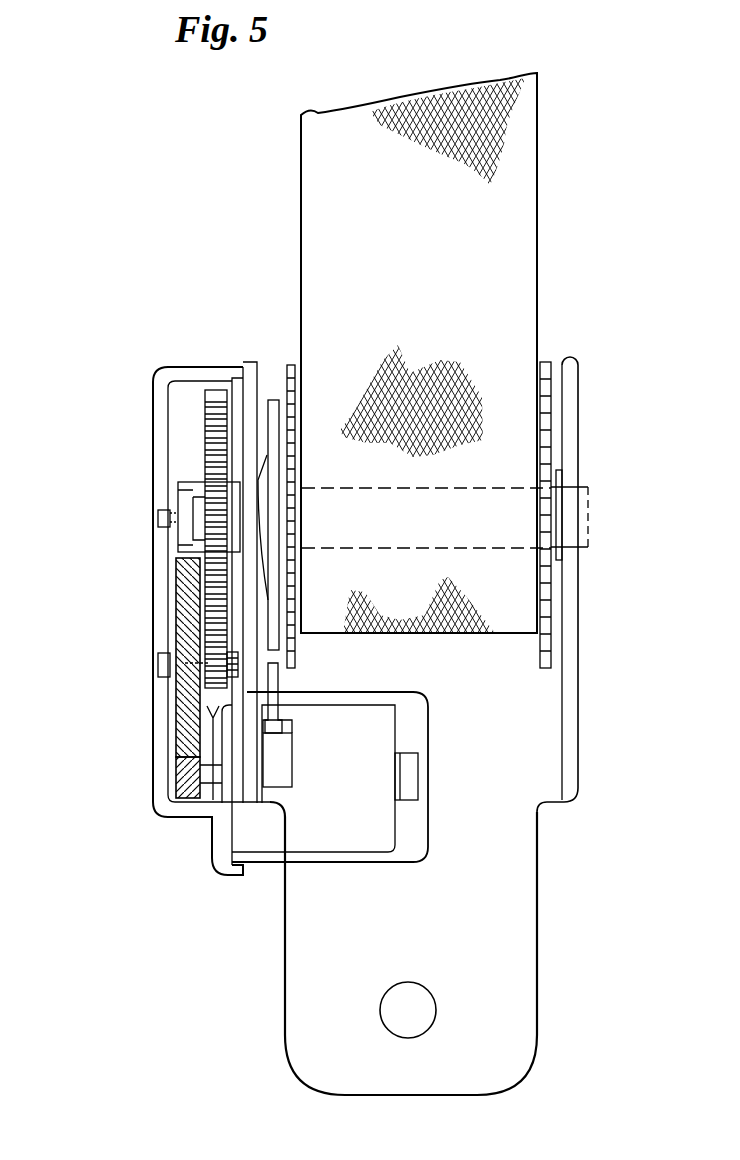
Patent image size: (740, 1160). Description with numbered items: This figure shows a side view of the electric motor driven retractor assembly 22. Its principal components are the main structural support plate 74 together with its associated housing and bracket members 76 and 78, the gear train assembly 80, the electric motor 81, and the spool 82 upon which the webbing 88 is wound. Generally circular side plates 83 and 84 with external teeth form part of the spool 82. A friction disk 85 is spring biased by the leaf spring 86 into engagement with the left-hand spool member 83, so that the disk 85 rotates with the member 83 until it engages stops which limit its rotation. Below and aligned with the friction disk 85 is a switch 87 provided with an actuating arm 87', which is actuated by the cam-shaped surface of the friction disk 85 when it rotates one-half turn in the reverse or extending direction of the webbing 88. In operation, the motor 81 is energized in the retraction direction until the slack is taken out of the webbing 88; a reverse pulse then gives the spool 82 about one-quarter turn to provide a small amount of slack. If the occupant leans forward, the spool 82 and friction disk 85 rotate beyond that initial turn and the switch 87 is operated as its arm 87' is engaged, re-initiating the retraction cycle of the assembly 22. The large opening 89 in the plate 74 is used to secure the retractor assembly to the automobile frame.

The retractor assembly 22 is at (127, 602).
The main structural support plate 74 is at (520, 957).
The bracket member 76 is at (570, 412).
The housing member 78 is at (158, 432).
The gear train assembly 80 is at (218, 580).
The electric motor 81 is at (390, 728).
The spool 82 is at (504, 548).
The left-hand spool member 83 is at (292, 365).
The side plate 84 is at (542, 364).
The friction disk 85 is at (273, 402).
The leaf spring 86 is at (265, 597).
The switch 87 is at (224, 802).
The actuating arm 87' is at (308, 695).
The webbing 88 is at (527, 227).
The large opening 89 is at (427, 1028).